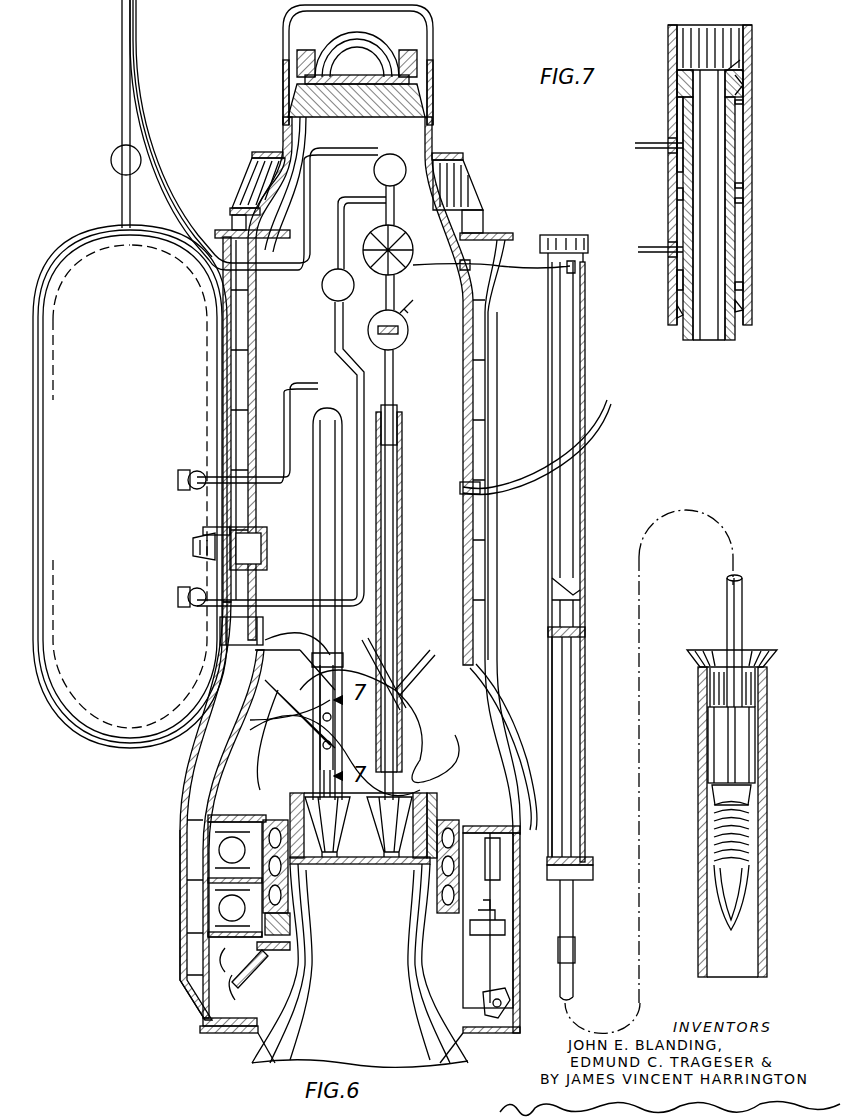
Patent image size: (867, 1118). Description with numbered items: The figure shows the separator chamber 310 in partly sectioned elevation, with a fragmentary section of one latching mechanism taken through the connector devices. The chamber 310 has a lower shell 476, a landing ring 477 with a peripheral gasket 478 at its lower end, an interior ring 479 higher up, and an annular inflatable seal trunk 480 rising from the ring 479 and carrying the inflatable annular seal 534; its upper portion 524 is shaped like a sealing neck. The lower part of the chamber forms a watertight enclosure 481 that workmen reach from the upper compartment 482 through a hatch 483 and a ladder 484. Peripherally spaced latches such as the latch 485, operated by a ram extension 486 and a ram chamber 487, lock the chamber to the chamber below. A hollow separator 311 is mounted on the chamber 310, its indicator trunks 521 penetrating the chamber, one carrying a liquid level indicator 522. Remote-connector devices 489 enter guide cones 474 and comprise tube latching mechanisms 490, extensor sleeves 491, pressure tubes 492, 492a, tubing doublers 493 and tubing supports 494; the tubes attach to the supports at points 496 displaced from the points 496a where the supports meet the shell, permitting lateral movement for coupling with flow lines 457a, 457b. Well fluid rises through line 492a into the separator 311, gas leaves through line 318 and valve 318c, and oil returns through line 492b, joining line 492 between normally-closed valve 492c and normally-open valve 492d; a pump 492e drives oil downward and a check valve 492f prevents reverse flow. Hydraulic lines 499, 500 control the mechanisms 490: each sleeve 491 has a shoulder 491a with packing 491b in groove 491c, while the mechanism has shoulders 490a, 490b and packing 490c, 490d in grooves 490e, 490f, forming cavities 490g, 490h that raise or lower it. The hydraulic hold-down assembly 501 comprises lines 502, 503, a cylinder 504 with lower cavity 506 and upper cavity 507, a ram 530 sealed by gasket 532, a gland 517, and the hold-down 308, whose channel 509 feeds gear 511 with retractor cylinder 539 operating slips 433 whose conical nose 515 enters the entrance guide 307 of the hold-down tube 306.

In FIG. 6, the separator chamber 310 is at (138, 873).
In FIG. 6, the separator 311 is at (135, 394).
In FIG. 6, the line 318 is at (122, 200).
In FIG. 6, the valve 318c is at (111, 160).
In FIG. 6, the upper compartment 482 is at (322, 354).
In FIG. 6, the watertight enclosure 481 is at (232, 790).
In FIG. 6, the ladder 484 is at (233, 740).
In FIG. 6, the lower shell 476 is at (200, 952).
In FIG. 6, the landing ring 477 is at (203, 1022).
In FIG. 6, the peripheral gasket 478 is at (220, 1033).
In FIG. 6, the flow line 457a is at (330, 850).
In FIG. 6, the flow line 457b is at (388, 850).
In FIG. 6, the remote-connector guide cone 474 is at (380, 822).
In FIG. 6, the interior ring 479 is at (240, 952).
In FIG. 6, the annular inflatable seal trunk 480 is at (488, 818).
In FIG. 6, the latch 485 is at (483, 1008).
In FIG. 6, the ram extension 486 is at (470, 927).
In FIG. 6, the inflatable annular seal 534 is at (437, 900).
In FIG. 6, the remote-connector device 489 is at (376, 742).
In FIG. 6, the tube latching mechanism 490 is at (350, 742).
In FIG. 7, the tube latching mechanism 490 is at (735, 336).
In FIG. 7, the extensor sleeve 491 is at (752, 35).
In FIG. 6, the tubing doubler 493 is at (397, 430).
In FIG. 6, the tubing support 494 is at (318, 513).
In FIG. 6, the attachment point 496 is at (340, 410).
In FIG. 6, the connection point 496a is at (410, 655).
In FIG. 6, the pressure tube 492 is at (168, 180).
In FIG. 6, the pressure tube 492a is at (215, 470).
In FIG. 6, the line 492b is at (207, 606).
In FIG. 6, the normally-closed valve 492c is at (374, 168).
In FIG. 6, the normally-open valve 492d is at (400, 345).
In FIG. 6, the pump 492e is at (469, 253).
In FIG. 6, the check valve 492f is at (322, 288).
In FIG. 6, the hydraulic operating line 499 is at (278, 750).
In FIG. 7, the hydraulic operating line 499 is at (655, 247).
In FIG. 6, the hydraulic operating line 500 is at (445, 772).
In FIG. 7, the hydraulic operating line 500 is at (635, 145).
In FIG. 6, the ram chamber 487 is at (369, 755).
In FIG. 6, the hydraulic operating line 502 is at (490, 672).
In FIG. 6, the hydraulic operating line 503 is at (520, 262).
In FIG. 6, the cylinder 504 is at (572, 490).
In FIG. 6, the lower cavity 506 is at (582, 696).
In FIG. 6, the upper cavity 507 is at (558, 606).
In FIG. 6, the ram 530 is at (576, 625).
In FIG. 6, the gasket 532 is at (586, 632).
In FIG. 6, the gland 517 is at (582, 832).
In FIG. 6, the channel 509 is at (568, 952).
In FIG. 6, the hydraulic hold-down assembly 501 is at (700, 515).
In FIG. 6, the hold-down 308 is at (743, 608).
In FIG. 6, the frusto-conical entrance guide 307 is at (768, 664).
In FIG. 6, the hold-down tube 306 is at (758, 720).
In FIG. 6, the operating gear 511 is at (708, 748).
In FIG. 6, the retractor cylinder 539 is at (754, 770).
In FIG. 6, the internal slips 433 is at (754, 828).
In FIG. 6, the conical nose 515 is at (733, 926).
In FIG. 6, the indicator trunk 521 is at (228, 525).
In FIG. 6, the liquid level indicator 522 is at (230, 548).
In FIG. 6, the hatch 483 is at (285, 640).
In FIG. 6, the upper portion 524 is at (270, 35).
In FIG. 7, the annular shoulder 490a is at (743, 65).
In FIG. 7, the annular shoulder 490b is at (743, 288).
In FIG. 7, the annular packing 490c is at (743, 84).
In FIG. 7, the annular packing 490d is at (743, 305).
In FIG. 7, the annular groove 490e is at (743, 102).
In FIG. 7, the annular groove 490f is at (678, 312).
In FIG. 7, the cavity 490g is at (680, 116).
In FIG. 7, the cavity 490h is at (680, 276).
In FIG. 7, the annular shoulder 491a is at (743, 188).
In FIG. 7, the annular packing 491b is at (680, 195).
In FIG. 7, the annular groove 491c is at (743, 200).